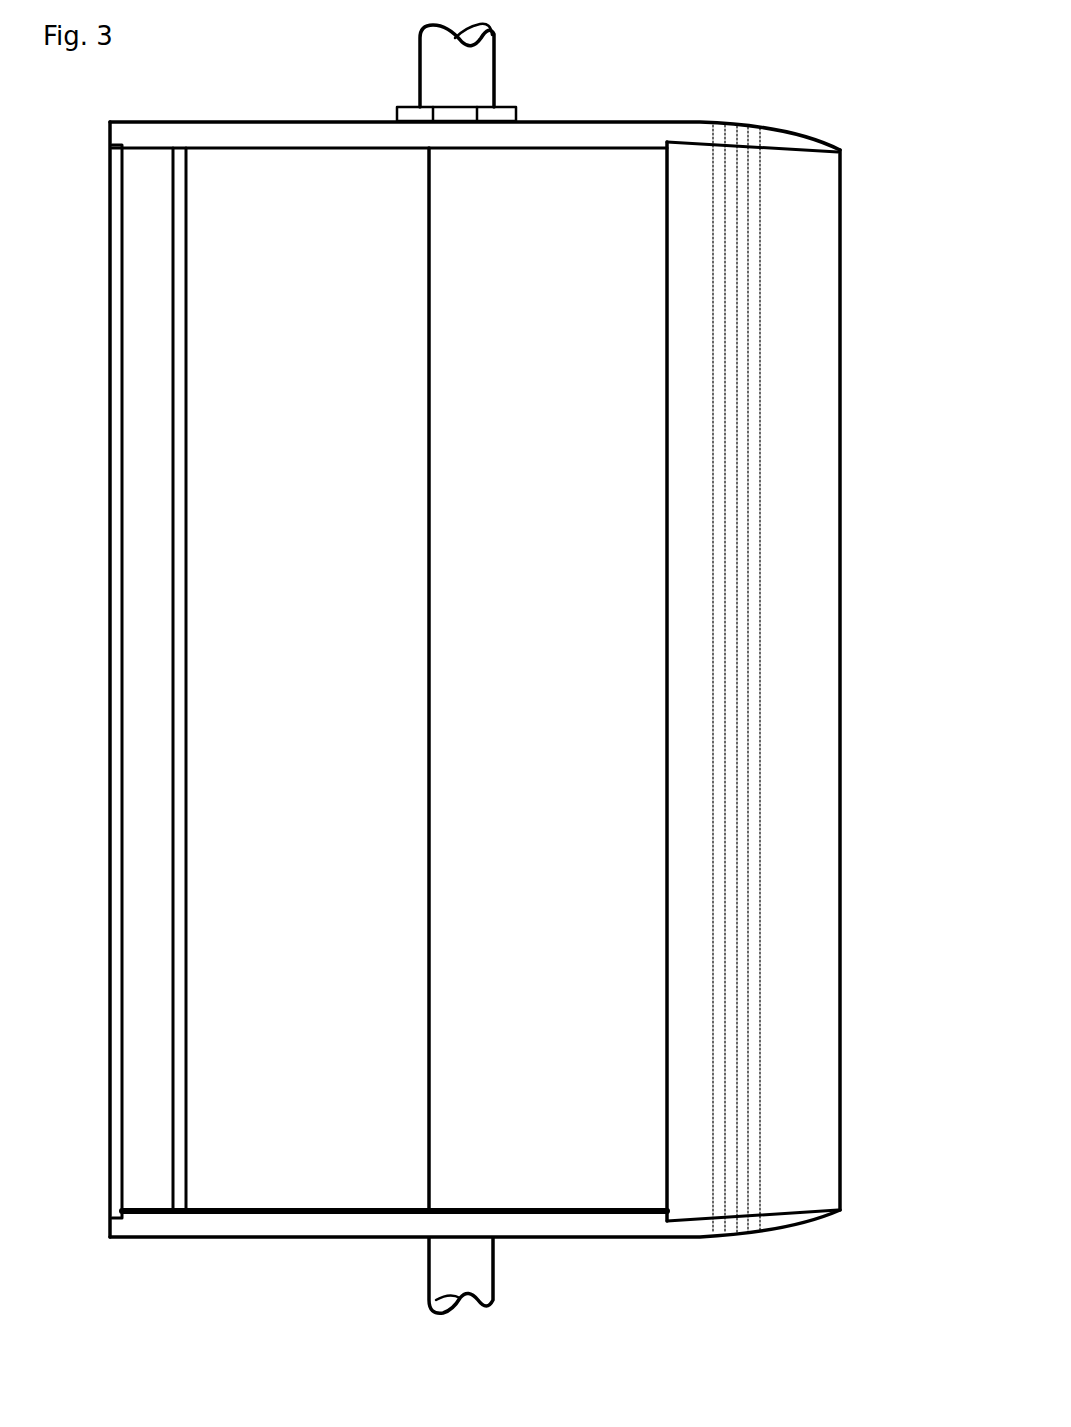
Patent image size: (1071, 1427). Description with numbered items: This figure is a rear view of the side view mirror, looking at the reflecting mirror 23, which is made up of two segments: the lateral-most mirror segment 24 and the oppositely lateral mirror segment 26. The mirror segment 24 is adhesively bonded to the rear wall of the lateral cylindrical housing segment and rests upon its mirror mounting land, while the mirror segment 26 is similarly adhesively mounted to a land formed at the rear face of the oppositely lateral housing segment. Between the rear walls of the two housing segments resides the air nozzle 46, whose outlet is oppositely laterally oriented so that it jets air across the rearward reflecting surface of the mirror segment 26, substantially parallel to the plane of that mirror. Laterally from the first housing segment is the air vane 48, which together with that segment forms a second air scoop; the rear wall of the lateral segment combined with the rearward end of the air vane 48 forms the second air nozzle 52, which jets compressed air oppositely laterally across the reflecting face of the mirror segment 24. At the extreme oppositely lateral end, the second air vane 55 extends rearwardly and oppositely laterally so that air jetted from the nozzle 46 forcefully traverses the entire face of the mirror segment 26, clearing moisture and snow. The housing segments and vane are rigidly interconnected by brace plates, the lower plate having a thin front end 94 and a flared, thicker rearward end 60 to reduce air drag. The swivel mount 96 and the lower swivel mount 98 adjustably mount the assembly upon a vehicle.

The reflecting mirror 23 is at (457, 485).
The lateral-most mirror segment 24 is at (584, 990).
The oppositely lateral mirror segment 26 is at (292, 775).
The air nozzle 46 is at (425, 957).
The air vane 48 is at (787, 393).
The second air nozzle 52 is at (665, 637).
The second air vane 55 is at (137, 622).
The rearward end 60 is at (312, 1225).
The front end 94 is at (303, 133).
The swivel mount 96 is at (486, 92).
The lower swivel mount 98 is at (496, 1270).